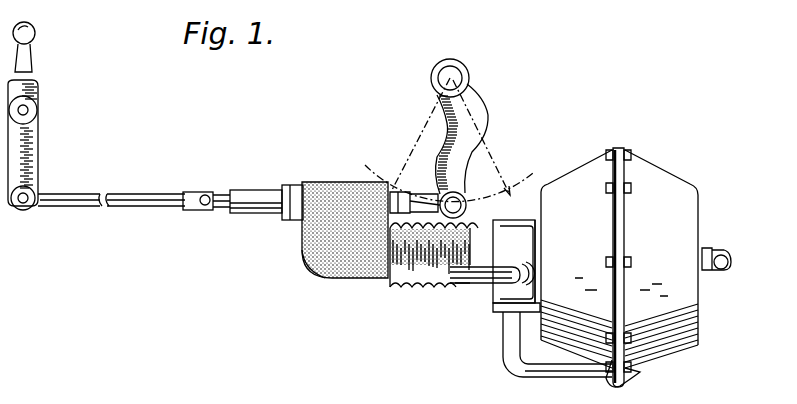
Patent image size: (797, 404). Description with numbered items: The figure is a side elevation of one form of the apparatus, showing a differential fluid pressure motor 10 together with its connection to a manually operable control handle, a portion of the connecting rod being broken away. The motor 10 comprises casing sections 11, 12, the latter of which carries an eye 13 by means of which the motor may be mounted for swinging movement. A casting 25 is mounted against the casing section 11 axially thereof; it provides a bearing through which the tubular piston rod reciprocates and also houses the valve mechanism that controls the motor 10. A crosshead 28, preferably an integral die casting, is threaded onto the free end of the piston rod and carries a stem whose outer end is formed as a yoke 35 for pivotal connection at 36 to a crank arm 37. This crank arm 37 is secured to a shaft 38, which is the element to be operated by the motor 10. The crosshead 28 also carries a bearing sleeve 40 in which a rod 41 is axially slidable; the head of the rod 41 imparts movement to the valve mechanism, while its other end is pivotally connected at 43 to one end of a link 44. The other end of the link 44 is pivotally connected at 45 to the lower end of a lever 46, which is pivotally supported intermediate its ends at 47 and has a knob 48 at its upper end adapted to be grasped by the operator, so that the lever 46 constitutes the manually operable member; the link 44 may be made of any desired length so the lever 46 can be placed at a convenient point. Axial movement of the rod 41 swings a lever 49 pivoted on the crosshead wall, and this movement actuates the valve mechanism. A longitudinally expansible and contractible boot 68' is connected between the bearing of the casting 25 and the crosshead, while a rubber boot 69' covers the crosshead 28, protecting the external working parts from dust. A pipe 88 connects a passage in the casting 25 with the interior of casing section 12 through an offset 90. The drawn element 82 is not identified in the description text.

The differential fluid pressure motor 10 is at (629, 264).
The casing section 11 is at (588, 176).
The casing section 12 is at (648, 178).
The eye 13 is at (729, 258).
The casting 25 is at (512, 234).
The crosshead 28 is at (296, 180).
The yoke 35 is at (421, 193).
The pivotal connection 36 is at (478, 212).
The crank arm 37 is at (483, 92).
The shaft 38 is at (460, 70).
The bearing sleeve 40 is at (255, 194).
The rod 41 is at (216, 210).
The pivotal connection 43 is at (209, 194).
The link 44 is at (146, 193).
The pivotal connection 45 is at (26, 204).
The lever 46 is at (38, 166).
The pivot 47 is at (29, 110).
The knob 48 is at (35, 33).
The lever 49 is at (303, 251).
The boot 69' is at (294, 269).
The boot 68' is at (434, 273).
The pipe 82 is at (466, 284).
The pipe 88 is at (536, 367).
The offset 90 is at (620, 372).